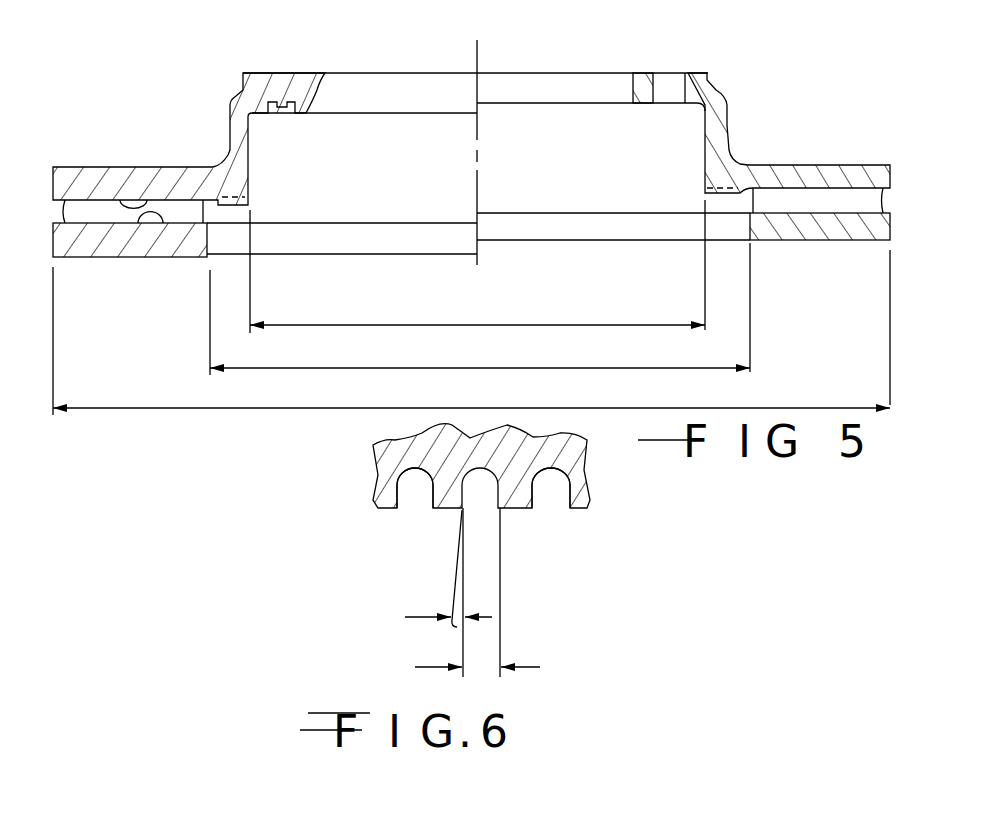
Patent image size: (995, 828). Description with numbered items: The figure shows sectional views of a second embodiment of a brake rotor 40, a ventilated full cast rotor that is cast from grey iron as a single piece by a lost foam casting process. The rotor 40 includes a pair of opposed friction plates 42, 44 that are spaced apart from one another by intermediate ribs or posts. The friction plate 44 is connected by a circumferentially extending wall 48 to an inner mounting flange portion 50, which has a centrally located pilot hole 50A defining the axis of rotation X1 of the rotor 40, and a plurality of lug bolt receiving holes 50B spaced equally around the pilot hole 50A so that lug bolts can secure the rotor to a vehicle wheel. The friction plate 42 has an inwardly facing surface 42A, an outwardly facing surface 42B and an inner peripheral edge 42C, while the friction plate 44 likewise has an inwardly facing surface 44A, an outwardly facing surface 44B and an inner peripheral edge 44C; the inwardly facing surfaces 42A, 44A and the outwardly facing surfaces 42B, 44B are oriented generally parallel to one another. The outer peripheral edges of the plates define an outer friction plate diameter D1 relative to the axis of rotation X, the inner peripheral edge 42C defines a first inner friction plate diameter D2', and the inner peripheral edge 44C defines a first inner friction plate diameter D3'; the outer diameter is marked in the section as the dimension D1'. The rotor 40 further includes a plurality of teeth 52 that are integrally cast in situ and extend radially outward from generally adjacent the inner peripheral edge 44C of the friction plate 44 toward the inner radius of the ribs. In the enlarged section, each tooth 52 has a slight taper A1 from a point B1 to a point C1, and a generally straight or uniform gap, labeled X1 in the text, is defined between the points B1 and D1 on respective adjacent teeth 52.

In FIG. 5, the brake rotor 40 is at (471, 180).
In FIG. 5, the friction plate 42 is at (818, 232).
In FIG. 5, the inwardly facing surface 42A is at (160, 223).
In FIG. 5, the outwardly facing surface 42B is at (84, 258).
In FIG. 5, the inner peripheral edge 42C is at (207, 257).
In FIG. 5, the friction plate 44 is at (803, 173).
In FIG. 5, the inwardly facing surface 44A is at (148, 200).
In FIG. 5, the outwardly facing surface 44B is at (85, 167).
In FIG. 5, the inner peripheral edge 44C is at (250, 170).
In FIG. 5, the circumferentially extending wall 48 is at (703, 158).
In FIG. 5, the inner mounting flange portion 50 is at (638, 93).
In FIG. 5, the pilot hole 50A is at (633, 88).
In FIG. 5, the lug bolt receiving holes 50B is at (678, 72).
In FIG. 5, the teeth 52 is at (262, 209).
In FIG. 6, the teeth 52 is at (430, 505).
In FIG. 5, the axis of rotation X1 is at (477, 60).
In FIG. 5, the outer diameter D1' is at (471, 332).
In FIG. 5, the first inner friction plate diameter D2' is at (480, 309).
In FIG. 5, the first inner friction plate diameter D3' is at (477, 266).
In FIG. 6, the point C1 is at (463, 478).
In FIG. 6, the point B1 is at (462, 512).
In FIG. 6, the outer friction plate diameter D1 is at (538, 592).
In FIG. 6, the taper A1 is at (452, 625).
In FIG. 6, the axis of rotation X is at (482, 668).